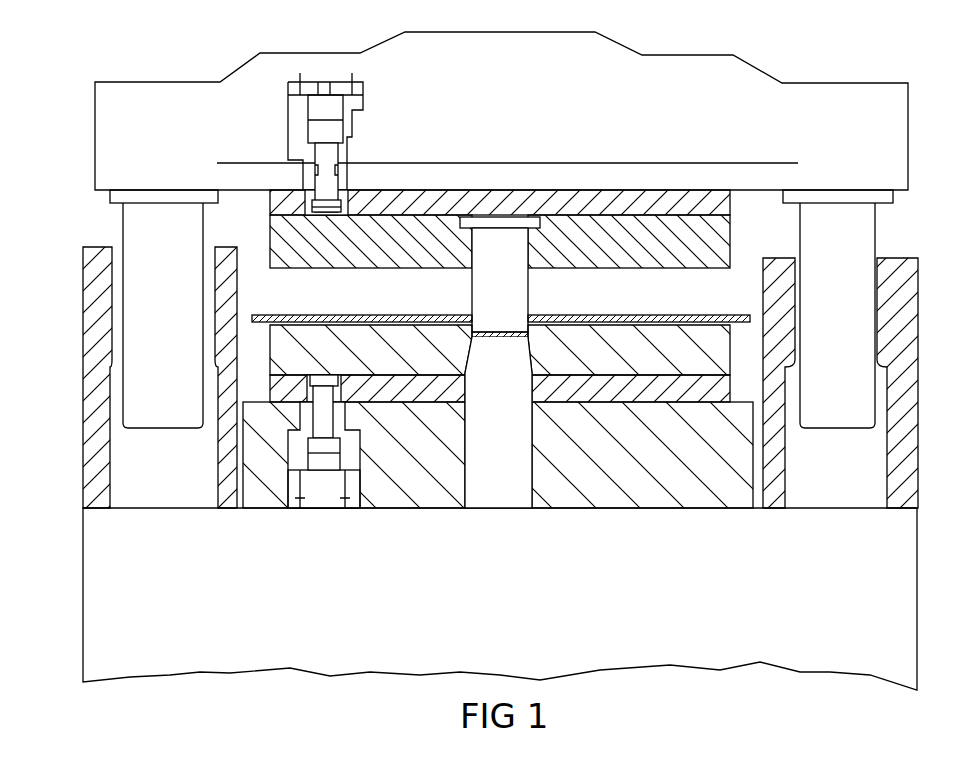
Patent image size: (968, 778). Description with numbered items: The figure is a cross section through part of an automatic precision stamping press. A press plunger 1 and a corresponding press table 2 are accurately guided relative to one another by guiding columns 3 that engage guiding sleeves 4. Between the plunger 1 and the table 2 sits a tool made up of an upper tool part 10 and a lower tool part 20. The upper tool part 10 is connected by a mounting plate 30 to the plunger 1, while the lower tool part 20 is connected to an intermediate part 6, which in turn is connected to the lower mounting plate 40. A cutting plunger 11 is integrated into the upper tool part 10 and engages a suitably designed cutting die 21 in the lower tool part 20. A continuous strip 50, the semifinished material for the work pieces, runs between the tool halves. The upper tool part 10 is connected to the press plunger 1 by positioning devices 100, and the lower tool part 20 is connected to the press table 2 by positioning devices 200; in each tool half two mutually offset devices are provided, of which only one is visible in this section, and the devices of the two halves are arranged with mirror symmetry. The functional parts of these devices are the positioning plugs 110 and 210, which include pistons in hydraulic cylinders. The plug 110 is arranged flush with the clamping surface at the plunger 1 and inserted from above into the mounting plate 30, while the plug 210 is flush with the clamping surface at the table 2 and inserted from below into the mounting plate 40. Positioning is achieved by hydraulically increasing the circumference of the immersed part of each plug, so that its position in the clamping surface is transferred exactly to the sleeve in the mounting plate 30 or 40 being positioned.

The press plunger 1 is at (772, 90).
The press table 2 is at (397, 642).
The guiding columns 3 is at (870, 230).
The guiding sleeves 4 is at (93, 418).
The intermediate part 6 is at (420, 490).
The upper tool part 10 is at (716, 238).
The cutting plunger 11 is at (502, 258).
The lower tool part 20 is at (617, 360).
The cutting die 21 is at (493, 367).
The mounting plate 30 is at (573, 197).
The mounting plate 40 is at (683, 390).
The continuous strip 50 is at (423, 316).
The positioning device 100 is at (330, 131).
The positioning plug 110 is at (325, 205).
The positioning device 200 is at (312, 485).
The positioning plug 210 is at (325, 398).